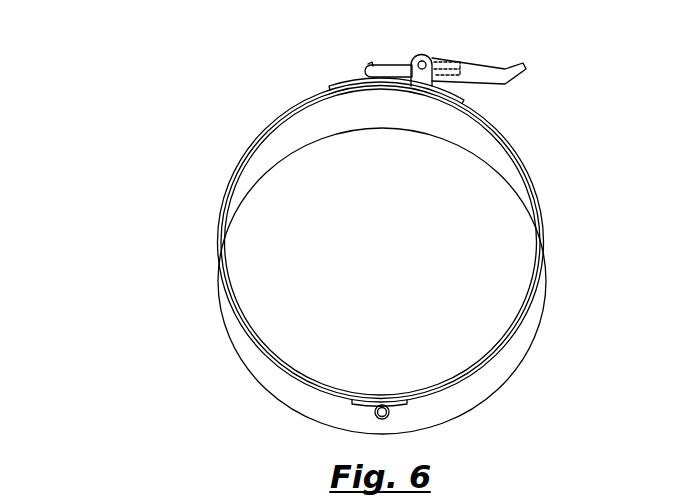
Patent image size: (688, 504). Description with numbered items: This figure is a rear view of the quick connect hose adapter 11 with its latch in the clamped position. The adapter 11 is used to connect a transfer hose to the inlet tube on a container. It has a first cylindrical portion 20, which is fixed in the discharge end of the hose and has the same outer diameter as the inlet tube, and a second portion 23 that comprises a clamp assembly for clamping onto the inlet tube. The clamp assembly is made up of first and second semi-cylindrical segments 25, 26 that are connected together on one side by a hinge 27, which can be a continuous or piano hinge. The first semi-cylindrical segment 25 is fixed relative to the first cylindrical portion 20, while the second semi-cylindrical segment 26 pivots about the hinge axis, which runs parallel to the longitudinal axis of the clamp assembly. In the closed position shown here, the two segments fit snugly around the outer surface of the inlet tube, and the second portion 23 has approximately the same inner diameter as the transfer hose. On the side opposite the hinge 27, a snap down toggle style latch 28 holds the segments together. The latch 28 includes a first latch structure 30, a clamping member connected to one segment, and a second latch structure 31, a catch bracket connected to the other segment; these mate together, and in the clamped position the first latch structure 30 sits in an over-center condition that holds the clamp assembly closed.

The quick connect hose adapter 11 is at (160, 205).
The first cylindrical portion 20 is at (255, 365).
The second portion 23 is at (238, 166).
The first semi-cylindrical segment 25 is at (522, 158).
The second semi-cylindrical segment 26 is at (282, 113).
The hinge 27 is at (388, 417).
The latch 28 is at (397, 64).
The first latch structure 30 is at (433, 58).
The second latch structure 31 is at (352, 80).